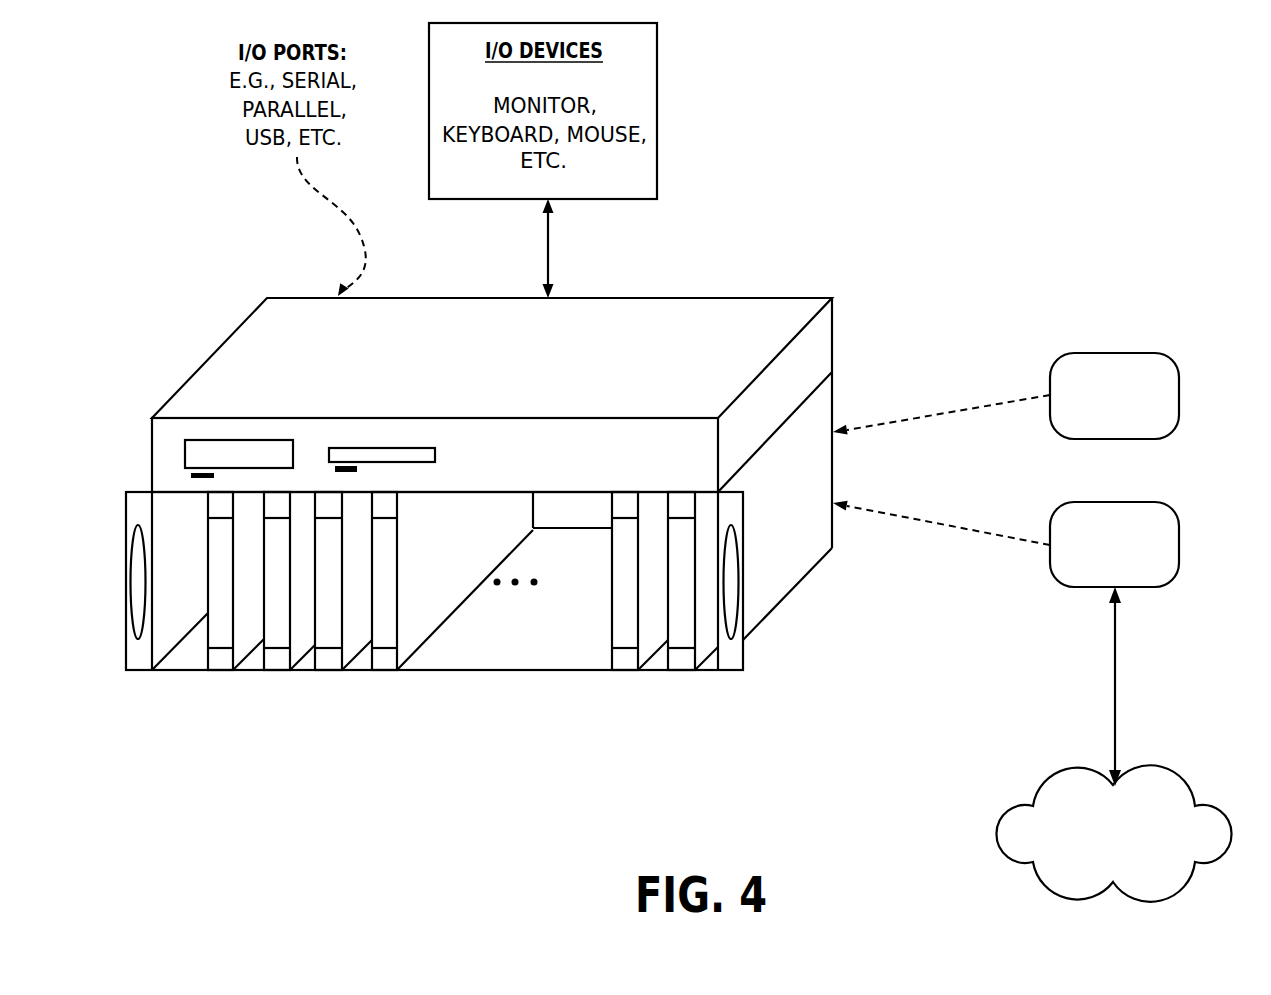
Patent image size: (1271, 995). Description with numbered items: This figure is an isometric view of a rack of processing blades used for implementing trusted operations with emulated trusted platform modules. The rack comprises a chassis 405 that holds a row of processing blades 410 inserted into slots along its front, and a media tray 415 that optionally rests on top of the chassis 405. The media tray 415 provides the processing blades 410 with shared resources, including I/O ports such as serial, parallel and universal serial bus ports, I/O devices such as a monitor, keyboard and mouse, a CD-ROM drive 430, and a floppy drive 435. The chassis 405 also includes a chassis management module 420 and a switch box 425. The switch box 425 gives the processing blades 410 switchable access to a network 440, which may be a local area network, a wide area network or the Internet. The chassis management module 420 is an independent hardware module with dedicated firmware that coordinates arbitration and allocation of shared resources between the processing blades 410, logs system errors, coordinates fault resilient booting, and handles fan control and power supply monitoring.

The chassis 405 is at (790, 577).
The processing blades 410 is at (218, 665).
The media tray 415 is at (822, 338).
The chassis management module 420 is at (1167, 407).
The switch box 425 is at (1167, 553).
The CD-ROM drive 430 is at (415, 452).
The floppy drive 435 is at (193, 452).
The network 440 is at (1178, 772).